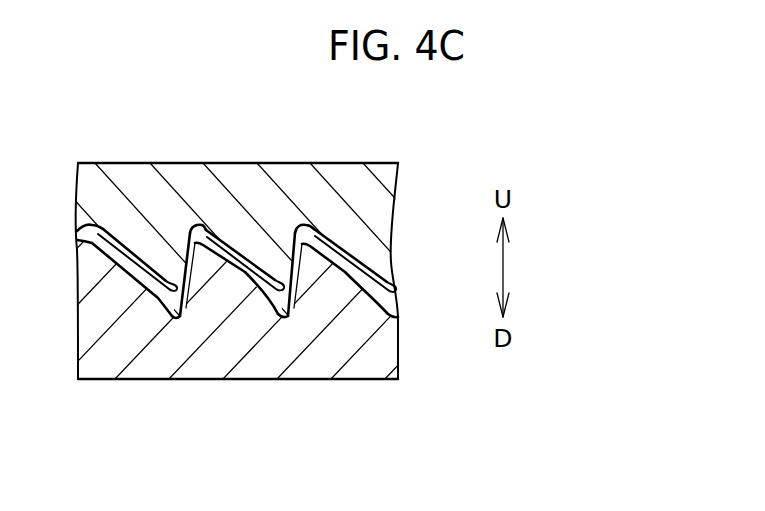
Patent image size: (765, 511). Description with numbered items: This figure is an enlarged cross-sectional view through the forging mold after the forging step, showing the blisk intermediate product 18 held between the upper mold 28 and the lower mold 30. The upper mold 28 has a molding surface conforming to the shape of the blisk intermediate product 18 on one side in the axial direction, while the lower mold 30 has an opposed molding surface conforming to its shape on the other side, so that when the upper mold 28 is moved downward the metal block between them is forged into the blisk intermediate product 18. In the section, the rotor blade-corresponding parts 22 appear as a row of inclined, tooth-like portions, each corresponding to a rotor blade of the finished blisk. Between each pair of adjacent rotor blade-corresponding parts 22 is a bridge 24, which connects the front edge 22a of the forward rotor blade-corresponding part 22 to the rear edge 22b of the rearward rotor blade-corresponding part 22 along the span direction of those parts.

The blisk intermediate product 18 is at (356, 251).
The rotor blade-corresponding part 22 is at (150, 238).
The front edge 22a is at (205, 224).
The rear edge 22b is at (172, 318).
The bridge 24 is at (197, 283).
The upper mold 28 is at (95, 163).
The lower mold 30 is at (133, 373).